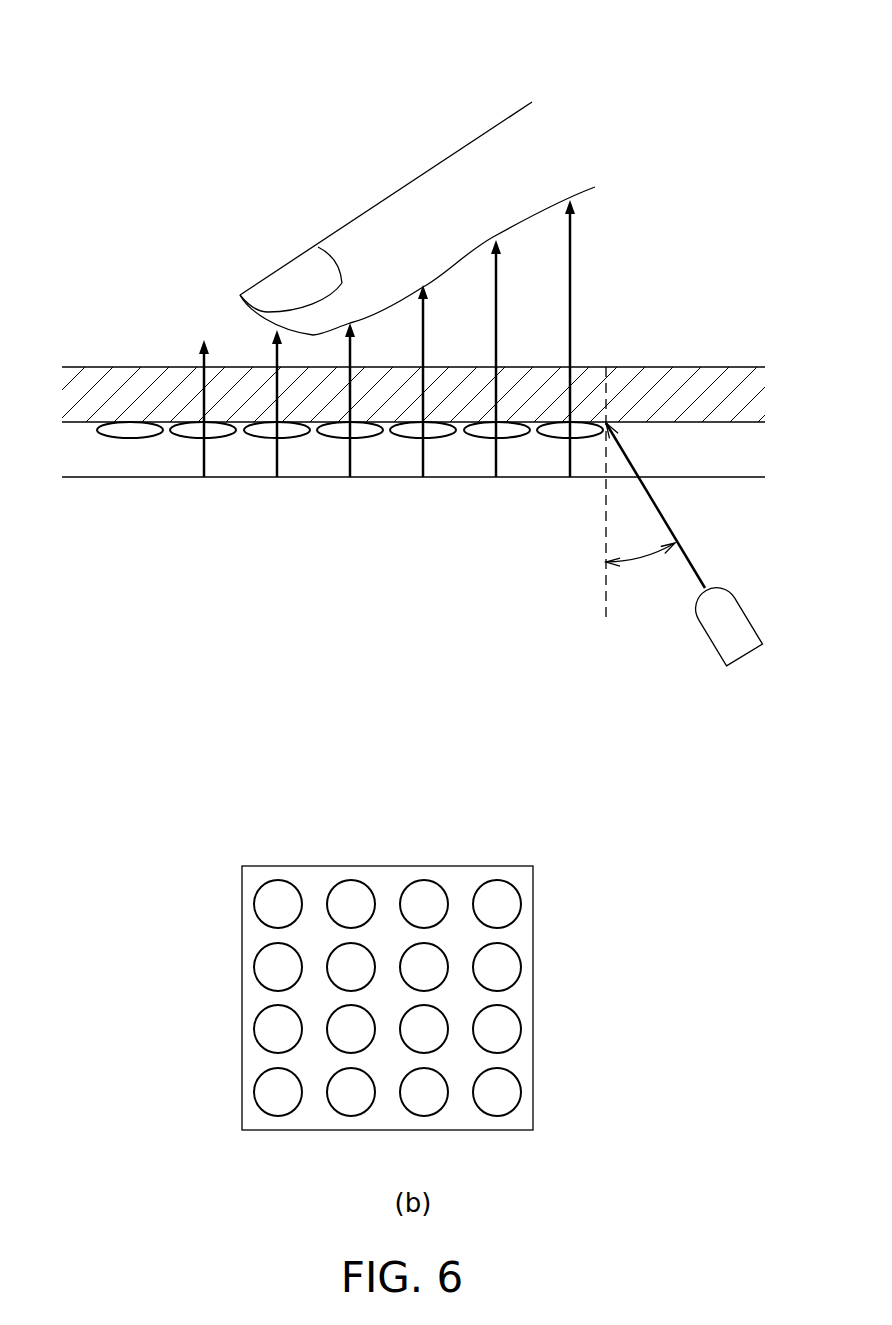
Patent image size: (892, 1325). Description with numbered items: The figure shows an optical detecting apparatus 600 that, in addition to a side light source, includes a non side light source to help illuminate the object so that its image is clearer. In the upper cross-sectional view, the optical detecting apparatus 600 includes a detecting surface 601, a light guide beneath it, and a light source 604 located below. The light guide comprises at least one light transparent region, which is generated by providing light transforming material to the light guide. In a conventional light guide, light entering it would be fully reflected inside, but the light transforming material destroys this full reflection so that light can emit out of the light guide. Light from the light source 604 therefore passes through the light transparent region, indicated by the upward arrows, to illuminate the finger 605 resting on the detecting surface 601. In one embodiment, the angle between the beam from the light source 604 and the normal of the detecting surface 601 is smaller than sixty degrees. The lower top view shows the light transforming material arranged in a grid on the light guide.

The optical detecting apparatus 600 is at (667, 90).
The detecting surface 601 is at (714, 367).
The light source 604 is at (713, 648).
The finger 605 is at (432, 183).